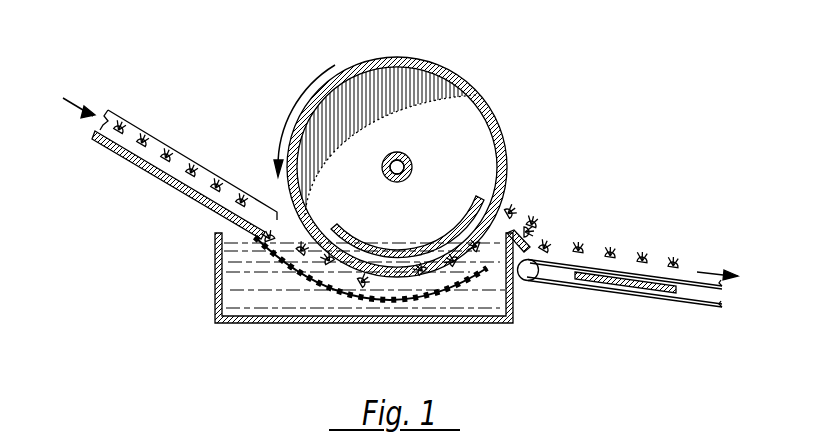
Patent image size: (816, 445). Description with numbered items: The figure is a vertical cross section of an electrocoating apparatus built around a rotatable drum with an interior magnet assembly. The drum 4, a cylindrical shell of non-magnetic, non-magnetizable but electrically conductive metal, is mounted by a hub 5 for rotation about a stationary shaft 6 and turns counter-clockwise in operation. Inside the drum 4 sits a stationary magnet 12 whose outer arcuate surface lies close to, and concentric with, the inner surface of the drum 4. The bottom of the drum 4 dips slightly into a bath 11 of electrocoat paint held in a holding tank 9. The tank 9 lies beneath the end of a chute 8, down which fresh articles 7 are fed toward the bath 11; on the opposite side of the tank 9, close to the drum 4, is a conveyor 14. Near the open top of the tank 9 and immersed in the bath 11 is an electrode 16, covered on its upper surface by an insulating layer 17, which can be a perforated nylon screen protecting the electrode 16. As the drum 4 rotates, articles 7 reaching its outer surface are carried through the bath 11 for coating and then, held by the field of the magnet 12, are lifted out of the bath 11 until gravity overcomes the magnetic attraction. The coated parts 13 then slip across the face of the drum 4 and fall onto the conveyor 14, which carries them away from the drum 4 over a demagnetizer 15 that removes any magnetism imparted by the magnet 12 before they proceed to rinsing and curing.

The drum 4 is at (432, 57).
The hub 5 is at (411, 157).
The stationary shaft 6 is at (413, 170).
The fresh articles 7 is at (191, 175).
The chute 8 is at (172, 180).
The holding tank 9 is at (214, 268).
The bath 11 is at (272, 297).
The stationary magnet 12 is at (428, 250).
The coated parts 13 is at (609, 258).
The conveyor 14 is at (704, 292).
The demagnetizer 15 is at (627, 289).
The electrode 16 is at (352, 302).
The insulating layer 17 is at (408, 305).